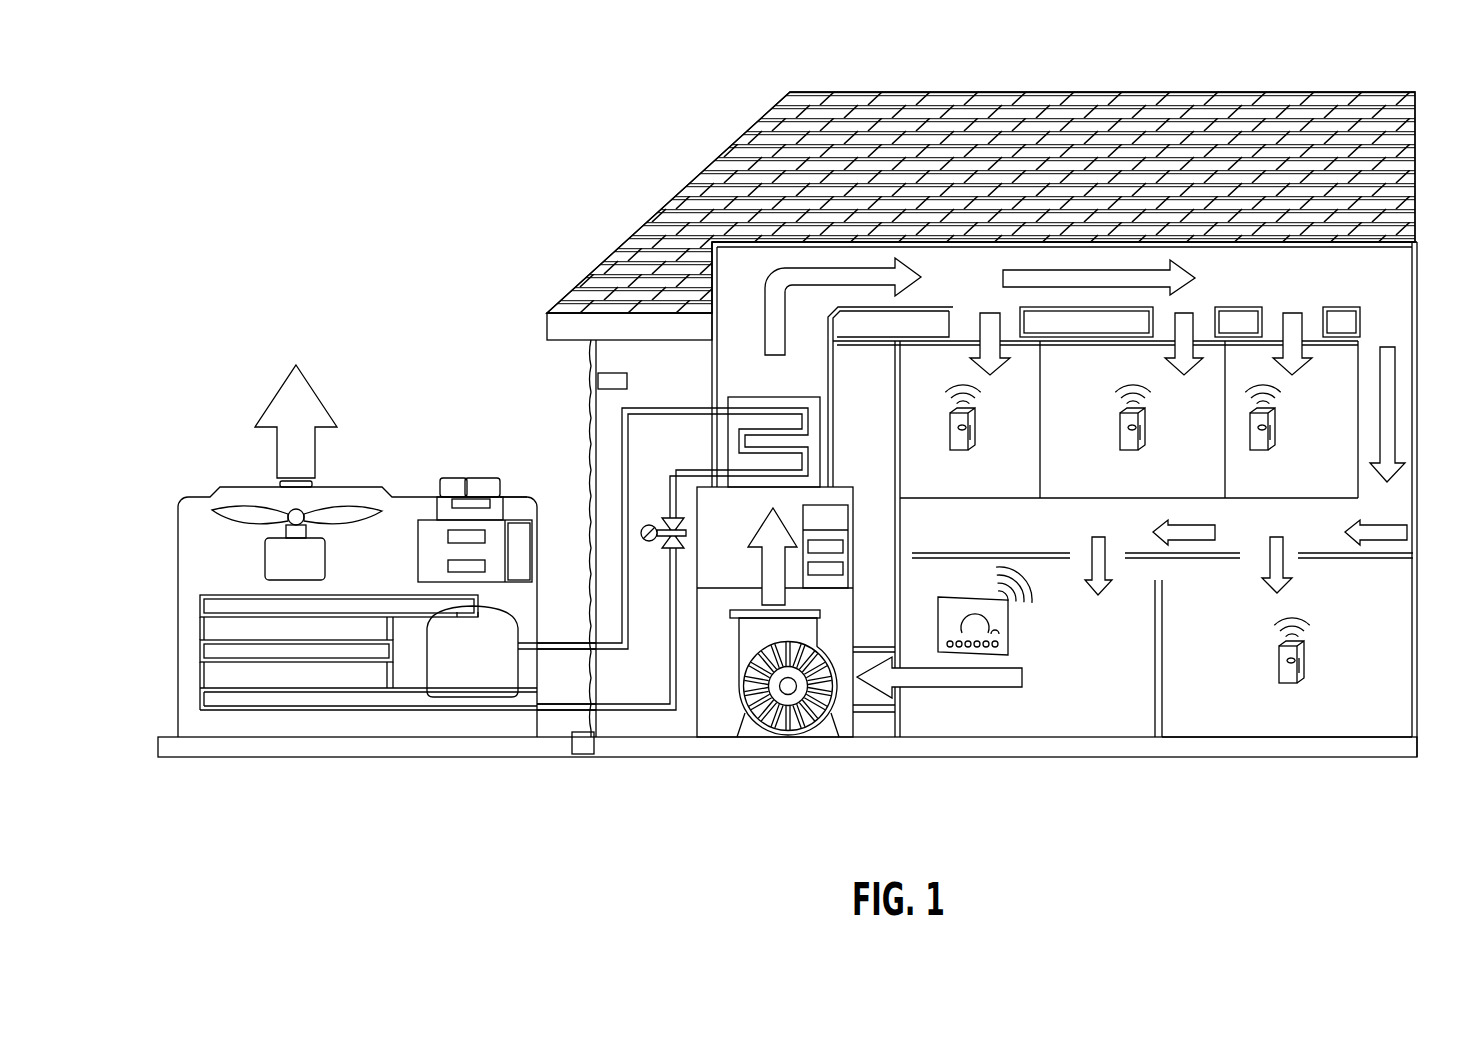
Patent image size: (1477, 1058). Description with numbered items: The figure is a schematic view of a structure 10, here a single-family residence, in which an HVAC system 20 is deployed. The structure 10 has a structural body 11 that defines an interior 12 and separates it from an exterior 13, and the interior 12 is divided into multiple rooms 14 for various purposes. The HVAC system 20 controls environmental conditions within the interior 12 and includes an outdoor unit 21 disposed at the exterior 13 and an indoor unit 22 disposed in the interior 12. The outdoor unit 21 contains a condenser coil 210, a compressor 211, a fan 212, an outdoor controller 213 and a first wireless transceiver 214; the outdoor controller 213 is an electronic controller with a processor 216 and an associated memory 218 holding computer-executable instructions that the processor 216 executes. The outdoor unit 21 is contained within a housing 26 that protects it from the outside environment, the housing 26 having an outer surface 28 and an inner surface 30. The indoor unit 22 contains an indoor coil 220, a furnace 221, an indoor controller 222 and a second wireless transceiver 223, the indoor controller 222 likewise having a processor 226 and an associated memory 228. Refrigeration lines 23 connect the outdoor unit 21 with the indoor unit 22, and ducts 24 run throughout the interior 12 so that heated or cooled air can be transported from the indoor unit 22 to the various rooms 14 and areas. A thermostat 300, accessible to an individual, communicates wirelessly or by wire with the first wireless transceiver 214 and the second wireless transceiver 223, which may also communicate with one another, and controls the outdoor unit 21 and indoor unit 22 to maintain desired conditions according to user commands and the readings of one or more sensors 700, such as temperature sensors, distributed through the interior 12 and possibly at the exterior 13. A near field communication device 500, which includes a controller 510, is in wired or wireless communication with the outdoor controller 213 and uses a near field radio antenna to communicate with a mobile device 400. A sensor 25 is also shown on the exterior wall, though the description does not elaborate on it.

The structure 10 is at (746, 124).
The structural body 11 is at (573, 327).
The interior 12 is at (1132, 658).
The exterior 13 is at (565, 498).
The rooms 14 is at (1287, 687).
The HVAC system 20 is at (770, 620).
The outdoor unit 21 is at (347, 592).
The indoor unit 22 is at (713, 713).
The refrigeration lines 23 is at (561, 712).
The ducts 24 is at (1248, 277).
The outdoor temperature sensor 25 is at (620, 372).
The housing 26 is at (215, 487).
The outer surface 28 is at (518, 488).
The inner surface 30 is at (178, 714).
The condenser coil 210 is at (284, 690).
The compressor 211 is at (453, 677).
The fan 212 is at (264, 557).
The outdoor controller 213 is at (469, 568).
The first wireless transceiver 214 is at (521, 527).
The processor 216 is at (447, 537).
The memory 218 is at (447, 566).
The indoor coil 220 is at (770, 431).
The furnace 221 is at (782, 693).
The indoor controller 222 is at (886, 526).
The second wireless transceiver 223 is at (828, 518).
The processor 226 is at (830, 547).
The memory 228 is at (830, 568).
The thermostat 300 is at (980, 655).
The mobile device 400 is at (455, 478).
The near field communication device 500 is at (437, 510).
The controller 510 is at (473, 478).
The sensors 700 is at (1304, 663).